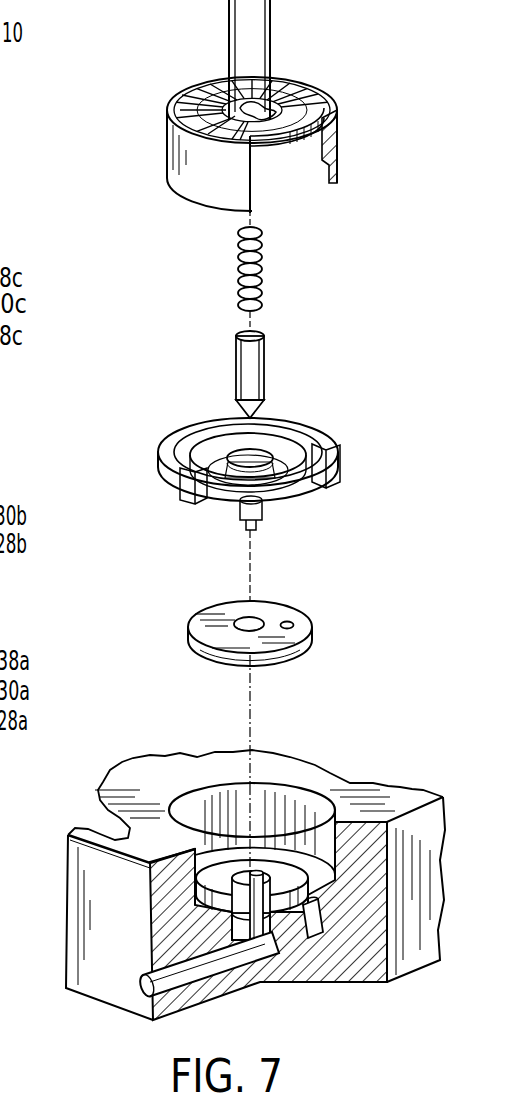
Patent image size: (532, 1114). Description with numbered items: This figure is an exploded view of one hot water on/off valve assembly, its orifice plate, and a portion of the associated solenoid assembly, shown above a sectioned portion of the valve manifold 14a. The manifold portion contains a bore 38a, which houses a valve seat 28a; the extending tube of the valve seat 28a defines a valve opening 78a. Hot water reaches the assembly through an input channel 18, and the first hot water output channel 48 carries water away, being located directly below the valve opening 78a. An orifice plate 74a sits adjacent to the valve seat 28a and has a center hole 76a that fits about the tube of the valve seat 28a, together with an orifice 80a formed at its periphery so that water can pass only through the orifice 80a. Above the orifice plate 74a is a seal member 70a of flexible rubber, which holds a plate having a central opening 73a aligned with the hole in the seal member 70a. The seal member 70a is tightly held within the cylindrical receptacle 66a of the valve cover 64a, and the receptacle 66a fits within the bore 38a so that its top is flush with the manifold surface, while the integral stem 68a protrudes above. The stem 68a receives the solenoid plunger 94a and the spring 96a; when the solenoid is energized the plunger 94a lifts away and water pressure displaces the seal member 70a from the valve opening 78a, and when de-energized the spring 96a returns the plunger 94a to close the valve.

The stem 68a is at (258, 38).
The valve cover 64a is at (340, 77).
The cylindrical receptacle 66a is at (204, 187).
The spring 96a is at (262, 258).
The plunger 94a is at (252, 368).
The seal member 70a is at (330, 450).
The opening 73a is at (253, 455).
The orifice plate 74a is at (312, 623).
The center hole 76a is at (262, 620).
The orifice 80a is at (292, 623).
The housing body 14a is at (150, 829).
The bore 38a is at (207, 792).
The valve seat 28a is at (294, 862).
The valve opening 78a is at (257, 873).
The first hot water output channel 48 is at (153, 985).
The input channel 18 is at (313, 915).